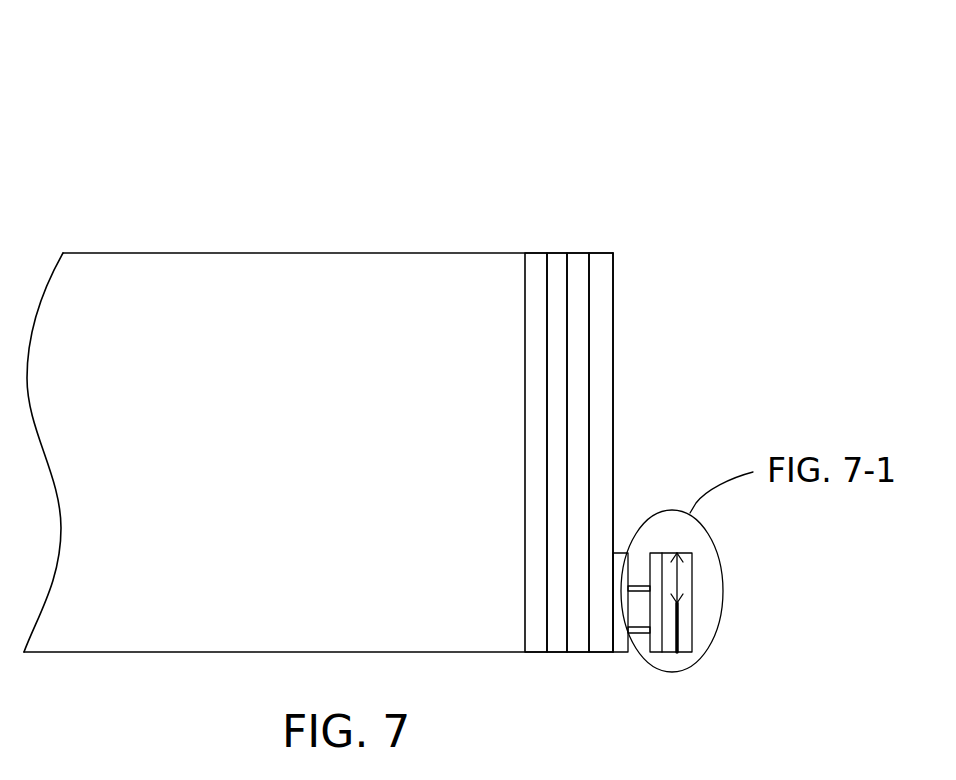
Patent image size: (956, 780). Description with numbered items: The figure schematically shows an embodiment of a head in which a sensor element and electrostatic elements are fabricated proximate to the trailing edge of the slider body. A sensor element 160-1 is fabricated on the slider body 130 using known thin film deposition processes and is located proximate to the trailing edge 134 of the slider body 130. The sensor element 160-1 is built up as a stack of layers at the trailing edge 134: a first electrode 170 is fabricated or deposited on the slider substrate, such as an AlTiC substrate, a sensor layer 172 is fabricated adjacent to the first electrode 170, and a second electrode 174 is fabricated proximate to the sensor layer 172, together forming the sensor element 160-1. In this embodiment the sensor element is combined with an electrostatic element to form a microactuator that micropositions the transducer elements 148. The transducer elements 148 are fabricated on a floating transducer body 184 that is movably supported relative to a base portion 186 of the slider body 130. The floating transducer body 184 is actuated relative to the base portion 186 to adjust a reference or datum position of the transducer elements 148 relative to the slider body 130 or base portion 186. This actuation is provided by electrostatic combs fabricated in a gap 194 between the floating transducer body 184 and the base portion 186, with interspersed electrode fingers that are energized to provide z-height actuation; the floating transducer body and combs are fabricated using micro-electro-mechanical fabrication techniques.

The slider body 130 is at (175, 327).
The sensor element 160-1 is at (598, 330).
The first electrode 170 is at (538, 255).
The sensor layer 172 is at (558, 255).
The second electrode 174 is at (578, 255).
The trailing edge 134 is at (650, 390).
The gap 194 is at (641, 583).
The floating transducer body 184 is at (682, 553).
The transducer elements 148 is at (681, 630).
The base portion 186 is at (622, 653).